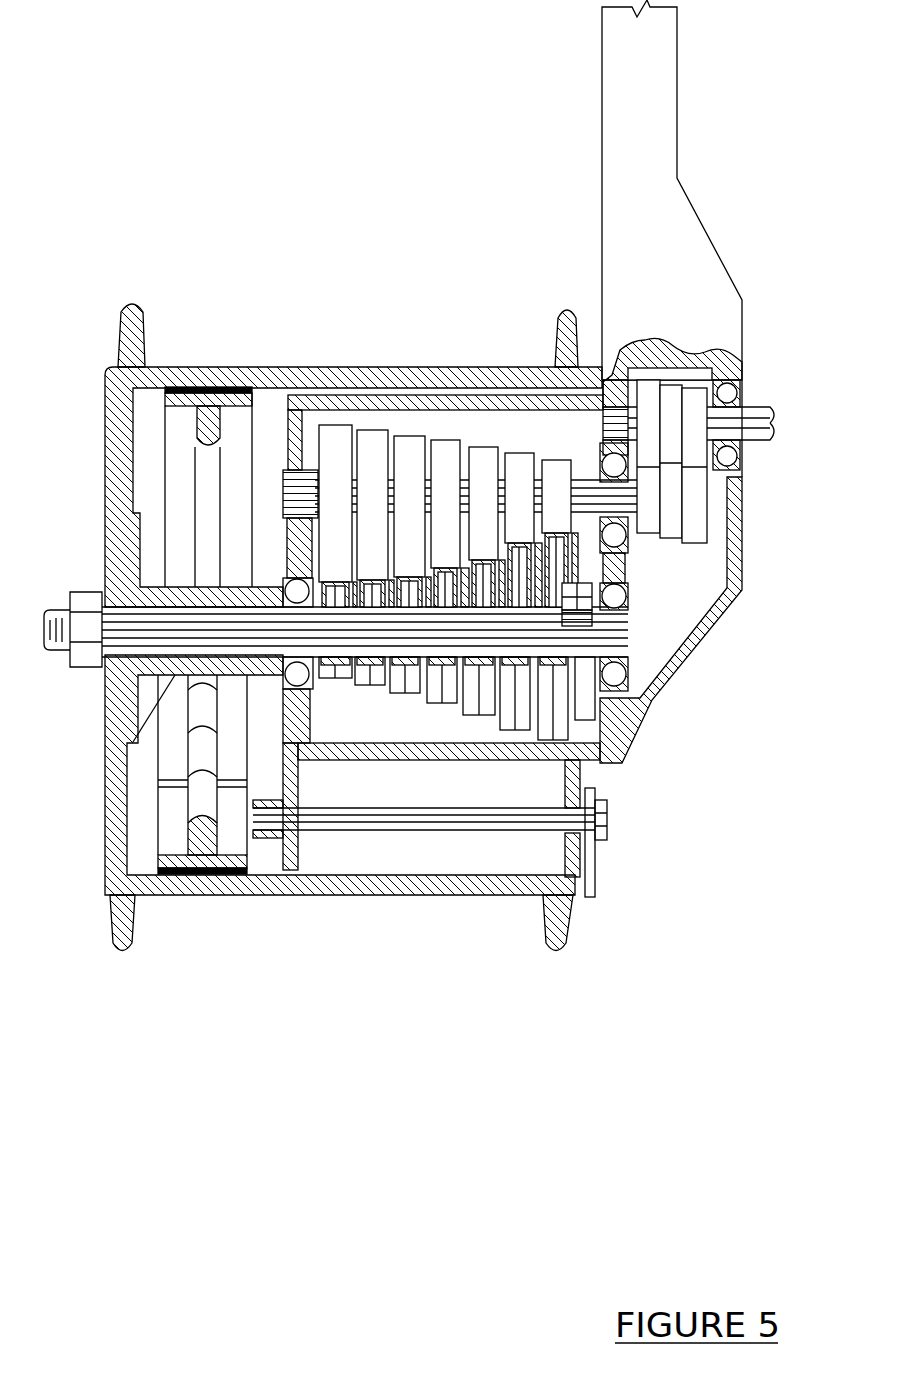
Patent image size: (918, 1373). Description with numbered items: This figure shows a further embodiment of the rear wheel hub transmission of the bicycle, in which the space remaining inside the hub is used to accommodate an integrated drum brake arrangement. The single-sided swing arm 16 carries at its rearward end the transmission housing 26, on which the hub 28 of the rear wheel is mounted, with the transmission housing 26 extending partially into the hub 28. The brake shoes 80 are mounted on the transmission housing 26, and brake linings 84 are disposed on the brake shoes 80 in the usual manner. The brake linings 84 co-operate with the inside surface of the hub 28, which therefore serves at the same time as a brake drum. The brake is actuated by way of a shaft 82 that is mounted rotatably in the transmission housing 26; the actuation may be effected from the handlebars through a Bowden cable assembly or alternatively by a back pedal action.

The single-sided swing arm 16 is at (673, 290).
The hub 28 is at (352, 383).
The transmission housing 26 is at (620, 737).
The brake shoes 80 is at (178, 497).
The brake linings 84 is at (200, 388).
The shaft 82 is at (557, 830).